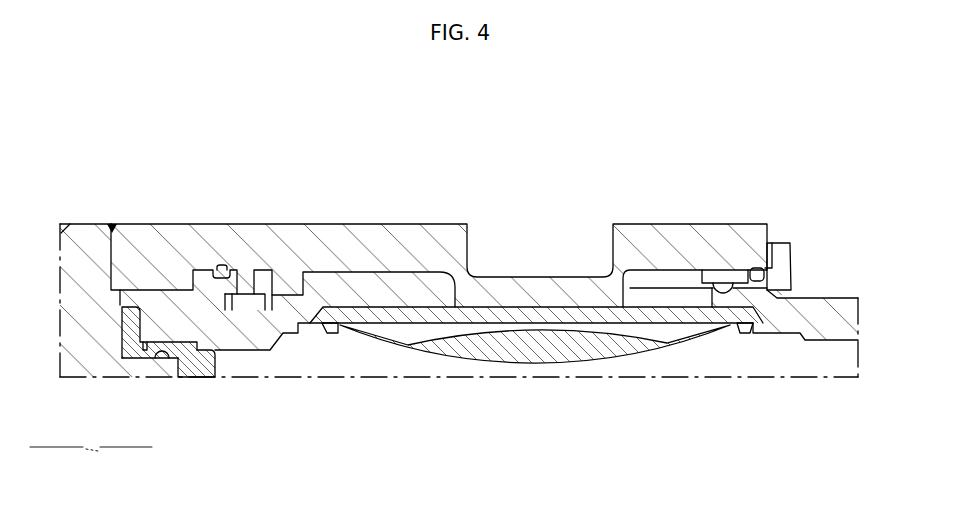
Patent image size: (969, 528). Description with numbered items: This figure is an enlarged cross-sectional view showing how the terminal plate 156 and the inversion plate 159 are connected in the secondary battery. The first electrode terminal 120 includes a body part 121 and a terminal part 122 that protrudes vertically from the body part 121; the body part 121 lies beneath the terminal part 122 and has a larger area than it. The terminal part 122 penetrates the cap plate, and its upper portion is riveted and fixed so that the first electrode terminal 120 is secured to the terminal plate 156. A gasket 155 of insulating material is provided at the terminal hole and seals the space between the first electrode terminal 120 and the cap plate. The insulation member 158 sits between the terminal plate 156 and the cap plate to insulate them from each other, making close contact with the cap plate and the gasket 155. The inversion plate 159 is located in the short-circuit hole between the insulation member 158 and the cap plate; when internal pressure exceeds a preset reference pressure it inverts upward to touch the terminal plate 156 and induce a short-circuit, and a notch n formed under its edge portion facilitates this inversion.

The first electrode terminal 120 is at (91, 467).
The body part 121 is at (75, 265).
The terminal part 122 is at (140, 358).
The gasket 155 is at (202, 362).
The terminal plate 156 is at (292, 223).
The insulation member 158 is at (782, 242).
The inversion plate 159 is at (551, 378).
The notch n is at (339, 336).